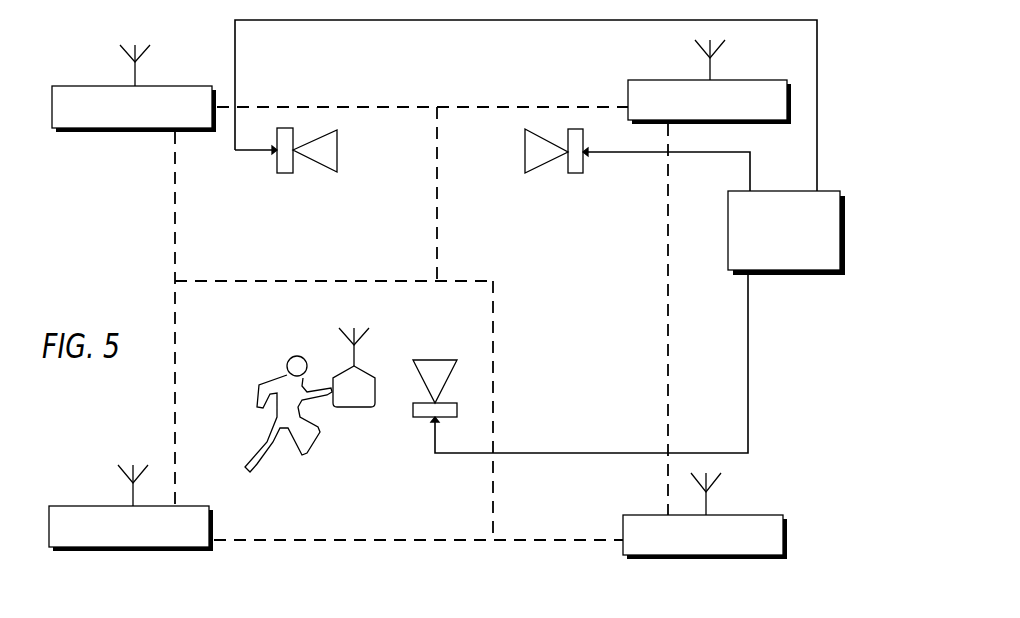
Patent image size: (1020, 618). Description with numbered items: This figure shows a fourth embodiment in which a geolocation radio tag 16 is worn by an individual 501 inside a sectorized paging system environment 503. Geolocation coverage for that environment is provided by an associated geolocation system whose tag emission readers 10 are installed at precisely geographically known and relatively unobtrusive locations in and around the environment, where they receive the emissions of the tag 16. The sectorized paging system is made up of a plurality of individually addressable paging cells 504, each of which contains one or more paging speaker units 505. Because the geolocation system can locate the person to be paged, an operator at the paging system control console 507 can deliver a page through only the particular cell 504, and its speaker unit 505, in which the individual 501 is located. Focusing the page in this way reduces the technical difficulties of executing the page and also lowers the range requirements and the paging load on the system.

The tag emission reader 10 is at (116, 86).
The geolocation radio tag 16 is at (350, 407).
The individual 501 is at (270, 414).
The sectorized paging system environment 503 is at (175, 210).
The paging cell 504 is at (370, 118).
The paging speaker unit 505 is at (317, 163).
The paging system control console 507 is at (766, 276).